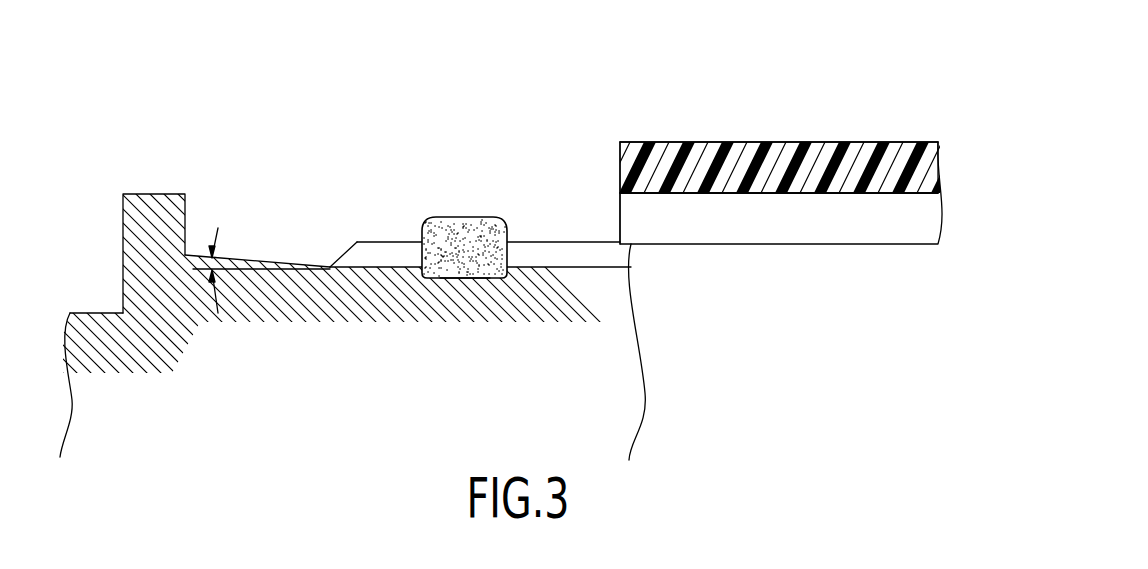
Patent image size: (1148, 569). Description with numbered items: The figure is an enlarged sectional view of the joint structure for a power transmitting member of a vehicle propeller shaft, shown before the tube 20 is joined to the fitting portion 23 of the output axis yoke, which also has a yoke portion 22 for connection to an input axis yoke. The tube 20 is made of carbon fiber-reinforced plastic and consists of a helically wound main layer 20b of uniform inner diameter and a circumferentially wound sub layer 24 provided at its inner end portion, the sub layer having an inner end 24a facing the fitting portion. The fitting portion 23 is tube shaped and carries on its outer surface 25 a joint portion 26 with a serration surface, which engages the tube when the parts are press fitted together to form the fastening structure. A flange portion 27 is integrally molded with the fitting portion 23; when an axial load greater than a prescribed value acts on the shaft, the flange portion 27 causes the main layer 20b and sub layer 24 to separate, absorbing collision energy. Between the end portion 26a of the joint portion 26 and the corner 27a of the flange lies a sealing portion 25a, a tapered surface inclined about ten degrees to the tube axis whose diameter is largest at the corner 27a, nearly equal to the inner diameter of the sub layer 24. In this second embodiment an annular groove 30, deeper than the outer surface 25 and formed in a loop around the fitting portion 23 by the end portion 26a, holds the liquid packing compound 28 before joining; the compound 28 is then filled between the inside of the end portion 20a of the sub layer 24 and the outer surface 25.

The tube 20 is at (760, 134).
The end portion of the sub layer 20a is at (642, 222).
The main layer 20b is at (872, 155).
The yoke portion 22 is at (90, 336).
The fitting portion 23 is at (620, 405).
The sub layer 24 is at (806, 228).
The edge of frame 24a is at (618, 203).
The outer surface 25 is at (568, 253).
The sealing portion 25a is at (258, 264).
The joint portion 26 is at (535, 250).
The end portion of the joint portion 26a is at (352, 256).
The flange portion 27 is at (158, 200).
The corner 27a is at (190, 255).
The liquid packing compound 28 is at (457, 238).
The annular groove 30 is at (472, 268).